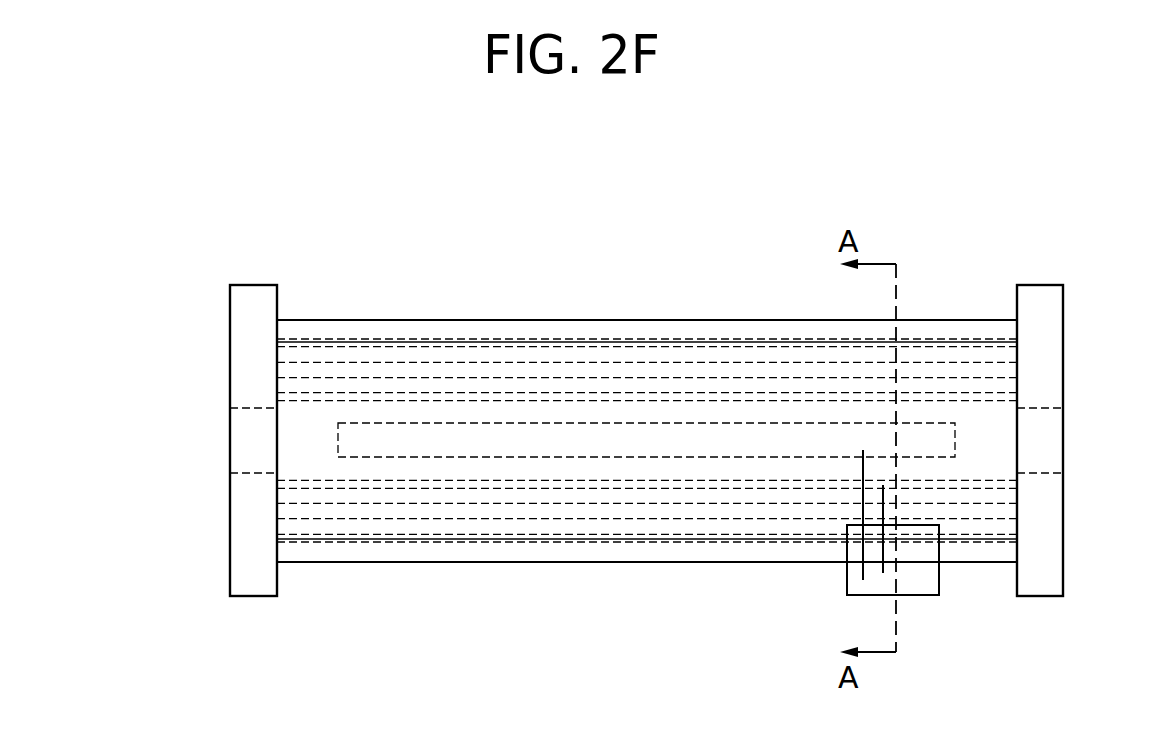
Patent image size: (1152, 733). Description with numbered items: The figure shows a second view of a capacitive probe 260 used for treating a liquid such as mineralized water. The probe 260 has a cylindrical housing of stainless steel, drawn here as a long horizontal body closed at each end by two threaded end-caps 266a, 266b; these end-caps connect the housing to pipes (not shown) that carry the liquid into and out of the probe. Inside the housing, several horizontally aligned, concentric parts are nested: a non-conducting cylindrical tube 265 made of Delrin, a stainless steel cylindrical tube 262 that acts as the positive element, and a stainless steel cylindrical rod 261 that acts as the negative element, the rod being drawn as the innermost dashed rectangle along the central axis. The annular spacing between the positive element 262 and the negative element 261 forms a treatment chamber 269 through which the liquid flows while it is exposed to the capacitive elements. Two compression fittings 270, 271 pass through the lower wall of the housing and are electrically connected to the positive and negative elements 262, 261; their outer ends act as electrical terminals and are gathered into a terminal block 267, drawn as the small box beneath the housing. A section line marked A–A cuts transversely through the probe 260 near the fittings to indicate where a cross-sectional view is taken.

The probe 260 is at (621, 272).
The stainless steel cylindrical rod 261 is at (360, 445).
The stainless steel cylindrical tube 262 is at (428, 397).
The non-conducting cylindrical tube 265 is at (500, 370).
The threaded end-cap 266a is at (238, 314).
The threaded end-cap 266b is at (1047, 375).
The terminal block 267 is at (939, 575).
The treatment chamber 269 is at (305, 427).
The compression fitting 270 is at (863, 509).
The compression fitting 271 is at (883, 551).